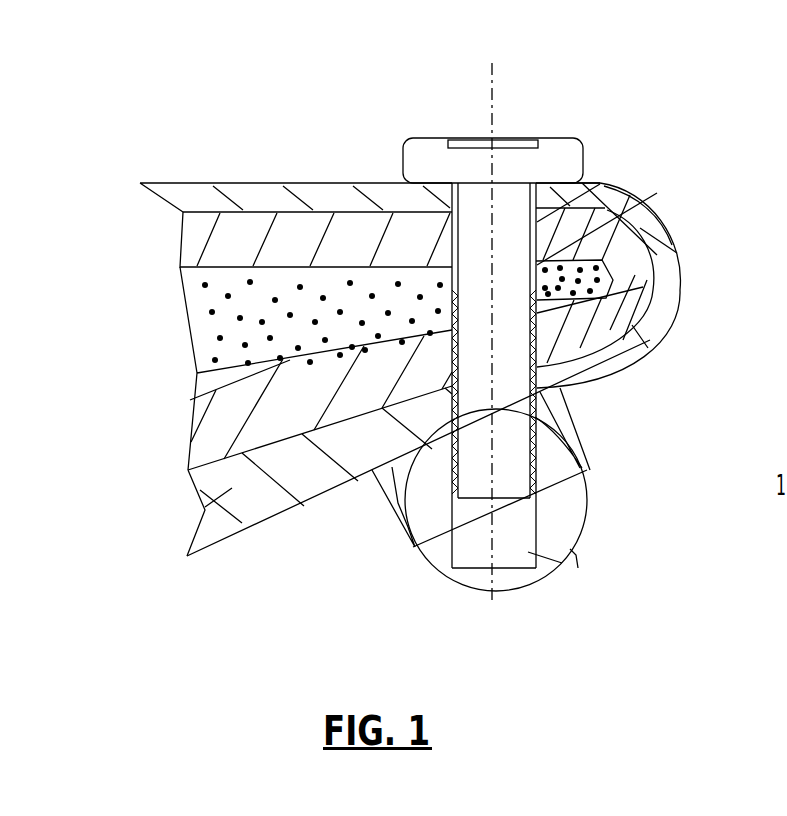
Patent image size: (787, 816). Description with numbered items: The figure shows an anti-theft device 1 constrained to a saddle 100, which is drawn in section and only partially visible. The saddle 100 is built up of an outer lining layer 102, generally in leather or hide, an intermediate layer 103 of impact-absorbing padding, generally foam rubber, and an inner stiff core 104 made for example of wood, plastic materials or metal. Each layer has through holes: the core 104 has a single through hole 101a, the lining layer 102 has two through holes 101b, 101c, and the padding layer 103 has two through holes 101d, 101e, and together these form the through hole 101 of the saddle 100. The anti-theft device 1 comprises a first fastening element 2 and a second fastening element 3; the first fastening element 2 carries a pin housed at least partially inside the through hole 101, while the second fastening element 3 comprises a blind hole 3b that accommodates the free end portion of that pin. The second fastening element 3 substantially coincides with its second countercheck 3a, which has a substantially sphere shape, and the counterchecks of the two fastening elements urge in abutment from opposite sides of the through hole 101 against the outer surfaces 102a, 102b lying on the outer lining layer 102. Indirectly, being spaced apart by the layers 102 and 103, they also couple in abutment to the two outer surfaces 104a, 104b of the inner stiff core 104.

The anti-theft device 1 is at (405, 125).
The first fastening element 2 is at (541, 122).
The second fastening element 3 is at (523, 588).
The second countercheck 3a is at (578, 520).
The blind hole 3b is at (575, 547).
The saddle 100 is at (263, 176).
The through hole 101 is at (516, 312).
The through hole 101a is at (677, 253).
The through hole 101b is at (625, 367).
The through hole 101c is at (640, 160).
The through hole 101d is at (657, 193).
The through hole 101e is at (607, 297).
The outer lining layer 102 is at (194, 538).
The outer surface 102a is at (230, 183).
The outer surface 102b is at (318, 502).
The intermediate layer 103 is at (195, 232).
The inner stiff core 104 is at (197, 322).
The outer surface 104a is at (200, 375).
The outer surface 104b is at (180, 268).